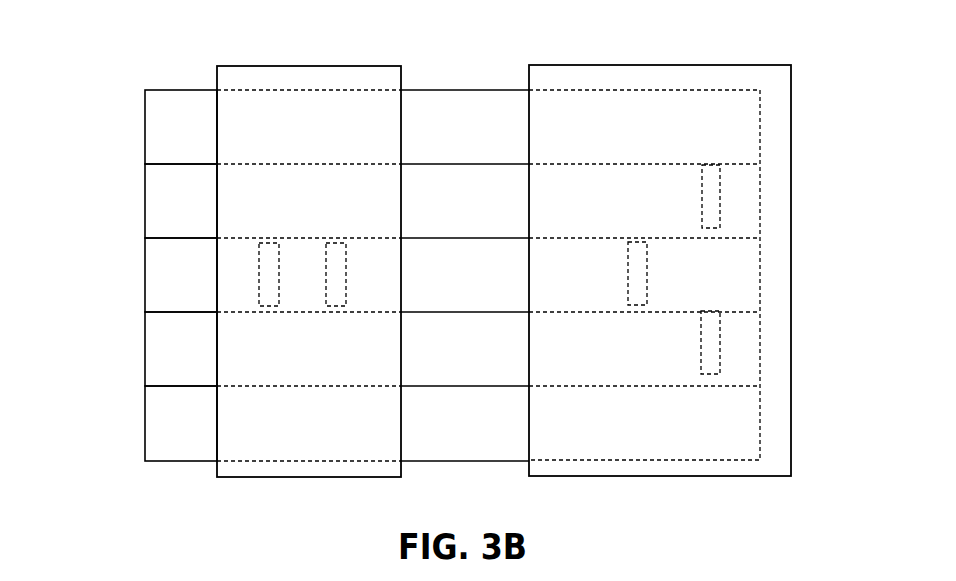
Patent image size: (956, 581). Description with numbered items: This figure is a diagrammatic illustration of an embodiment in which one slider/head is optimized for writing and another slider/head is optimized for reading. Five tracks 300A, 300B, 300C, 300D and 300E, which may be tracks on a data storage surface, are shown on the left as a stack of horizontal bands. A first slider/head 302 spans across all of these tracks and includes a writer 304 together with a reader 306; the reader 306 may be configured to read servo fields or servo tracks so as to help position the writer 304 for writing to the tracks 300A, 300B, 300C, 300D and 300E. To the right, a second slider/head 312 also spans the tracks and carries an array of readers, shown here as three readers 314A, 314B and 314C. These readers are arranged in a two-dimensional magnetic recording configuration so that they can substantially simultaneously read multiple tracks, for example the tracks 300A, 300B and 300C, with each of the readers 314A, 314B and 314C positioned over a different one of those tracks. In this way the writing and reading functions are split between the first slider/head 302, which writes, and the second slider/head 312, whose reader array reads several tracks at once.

The track 300A is at (157, 299).
The track 300B is at (157, 222).
The track 300C is at (157, 368).
The track 300D is at (157, 446).
The track 300E is at (157, 142).
The first slider/head 302 is at (368, 77).
The writer 304 is at (340, 293).
The reader 306 is at (268, 293).
The second slider/head 312 is at (766, 75).
The reader 314A is at (637, 293).
The reader 314B is at (711, 183).
The reader 314C is at (712, 318).